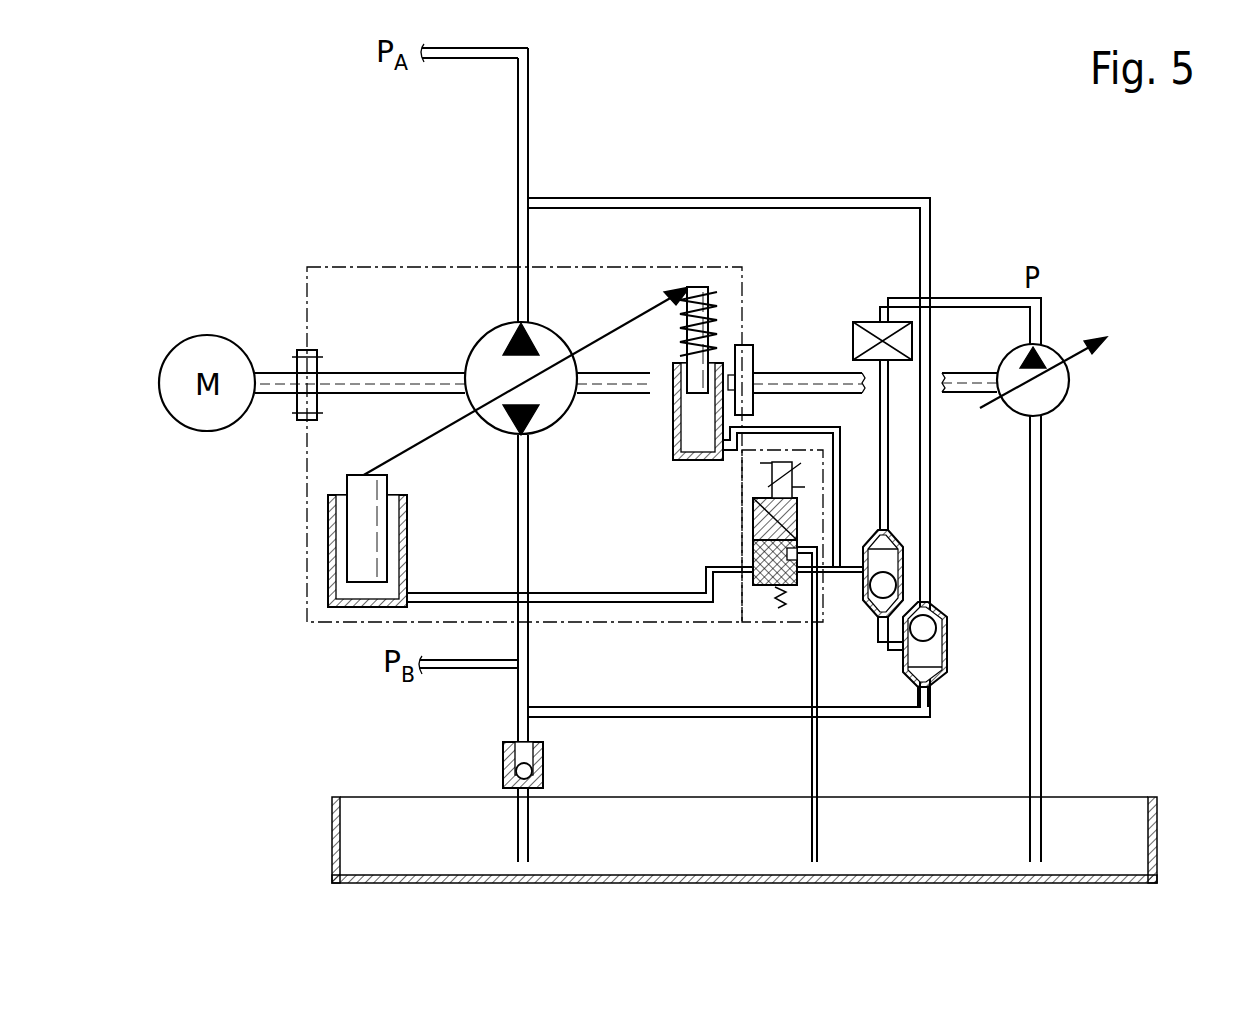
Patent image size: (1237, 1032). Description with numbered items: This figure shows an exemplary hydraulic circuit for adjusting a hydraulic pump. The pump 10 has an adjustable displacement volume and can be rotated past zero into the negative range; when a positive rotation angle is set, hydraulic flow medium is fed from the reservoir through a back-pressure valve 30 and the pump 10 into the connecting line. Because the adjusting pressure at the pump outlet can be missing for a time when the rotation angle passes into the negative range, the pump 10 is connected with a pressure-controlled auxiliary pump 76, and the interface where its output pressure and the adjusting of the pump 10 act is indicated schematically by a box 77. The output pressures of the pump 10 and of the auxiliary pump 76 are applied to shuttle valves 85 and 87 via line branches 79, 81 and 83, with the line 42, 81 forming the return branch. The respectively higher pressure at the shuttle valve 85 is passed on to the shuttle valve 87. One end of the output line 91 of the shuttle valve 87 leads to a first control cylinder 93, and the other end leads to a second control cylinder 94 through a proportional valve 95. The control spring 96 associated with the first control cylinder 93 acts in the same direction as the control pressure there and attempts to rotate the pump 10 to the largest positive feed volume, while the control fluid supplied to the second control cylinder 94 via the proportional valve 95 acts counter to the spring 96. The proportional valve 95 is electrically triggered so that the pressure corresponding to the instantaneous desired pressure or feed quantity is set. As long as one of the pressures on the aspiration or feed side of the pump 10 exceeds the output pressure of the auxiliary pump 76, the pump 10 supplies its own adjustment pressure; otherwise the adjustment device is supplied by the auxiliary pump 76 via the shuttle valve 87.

The pump 10 is at (562, 438).
The back-pressure valve 30 is at (502, 766).
The return line 42 is at (678, 718).
The line branch 81 is at (729, 748).
The auxiliary pump 76 is at (1060, 392).
The box 77 is at (862, 321).
The line branch 79 is at (775, 197).
The line branch 83 is at (980, 297).
The shuttle valve 85 is at (955, 648).
The shuttle valve 87 is at (900, 560).
The output line 91 is at (838, 542).
The first control cylinder 93 is at (697, 466).
The second control cylinder 94 is at (348, 604).
The proportional valve 95 is at (760, 600).
The control spring 96 is at (720, 322).